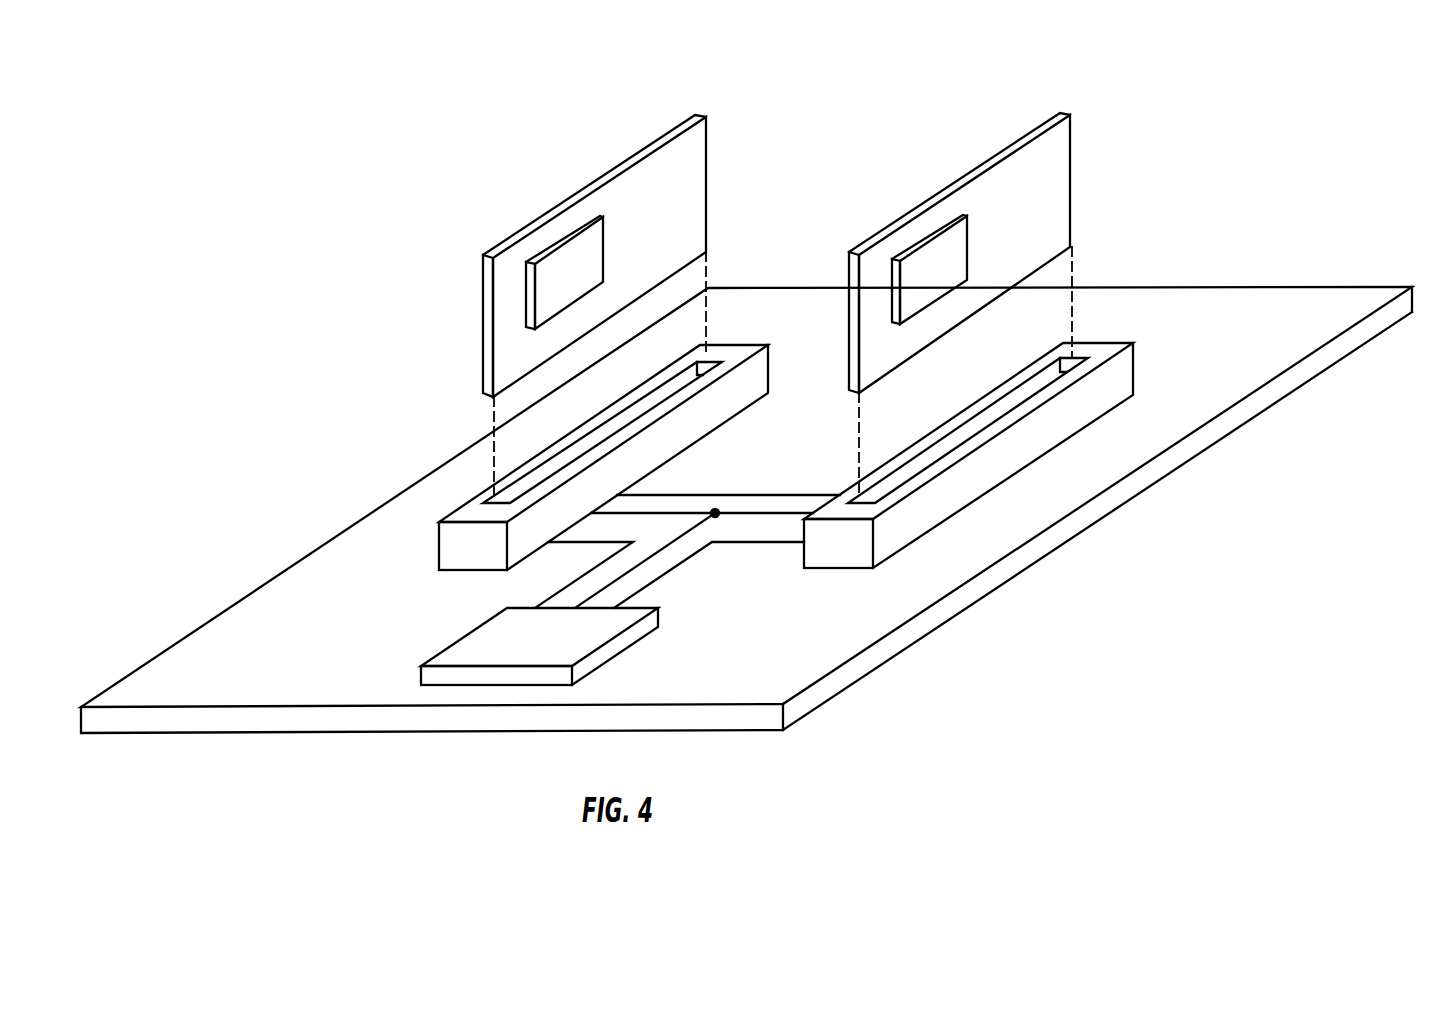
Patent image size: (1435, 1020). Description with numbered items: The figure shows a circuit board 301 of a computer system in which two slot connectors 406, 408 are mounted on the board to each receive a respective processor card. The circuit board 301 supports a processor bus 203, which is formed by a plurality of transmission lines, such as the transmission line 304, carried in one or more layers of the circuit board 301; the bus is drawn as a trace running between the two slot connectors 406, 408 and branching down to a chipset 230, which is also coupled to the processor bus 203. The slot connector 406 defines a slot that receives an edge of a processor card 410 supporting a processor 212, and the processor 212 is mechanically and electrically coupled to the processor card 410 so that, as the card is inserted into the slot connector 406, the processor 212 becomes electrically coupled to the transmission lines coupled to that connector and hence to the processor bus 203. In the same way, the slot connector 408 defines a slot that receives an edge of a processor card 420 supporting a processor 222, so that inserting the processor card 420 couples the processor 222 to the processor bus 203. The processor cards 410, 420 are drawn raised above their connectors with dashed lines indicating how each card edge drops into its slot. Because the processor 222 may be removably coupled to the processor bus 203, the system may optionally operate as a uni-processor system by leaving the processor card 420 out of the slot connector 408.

The circuit board 301 is at (746, 486).
The processor card 410 is at (624, 306).
The processor 212 is at (593, 270).
The processor card 420 is at (989, 305).
The processor 222 is at (962, 267).
The slot connector 406 is at (552, 457).
The slot connector 408 is at (1010, 433).
The processor bus 203 is at (687, 527).
The transmission line 304 is at (702, 529).
The chipset 230 is at (573, 628).